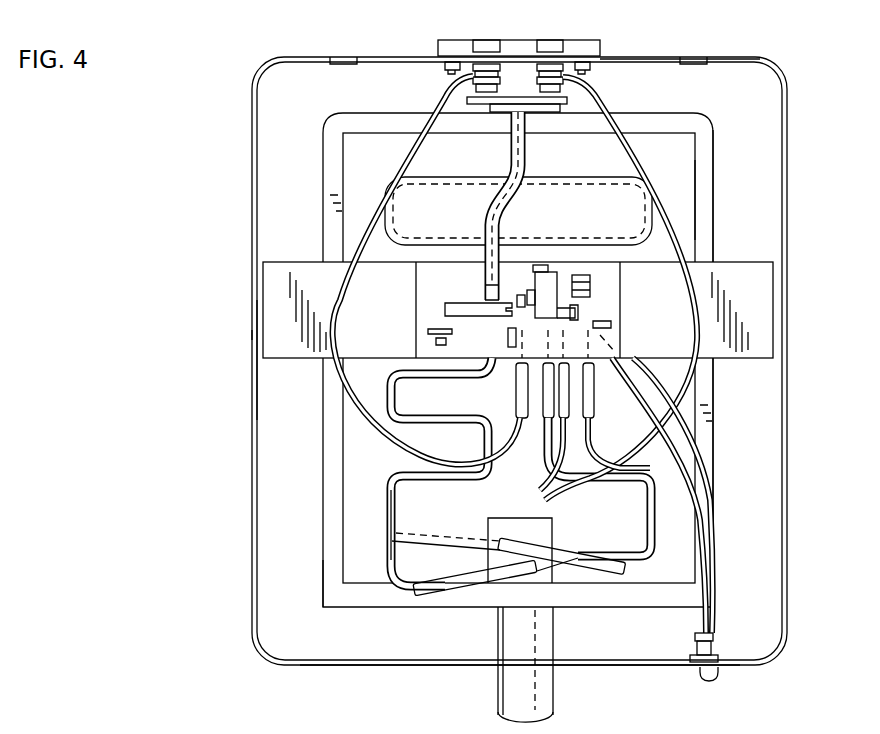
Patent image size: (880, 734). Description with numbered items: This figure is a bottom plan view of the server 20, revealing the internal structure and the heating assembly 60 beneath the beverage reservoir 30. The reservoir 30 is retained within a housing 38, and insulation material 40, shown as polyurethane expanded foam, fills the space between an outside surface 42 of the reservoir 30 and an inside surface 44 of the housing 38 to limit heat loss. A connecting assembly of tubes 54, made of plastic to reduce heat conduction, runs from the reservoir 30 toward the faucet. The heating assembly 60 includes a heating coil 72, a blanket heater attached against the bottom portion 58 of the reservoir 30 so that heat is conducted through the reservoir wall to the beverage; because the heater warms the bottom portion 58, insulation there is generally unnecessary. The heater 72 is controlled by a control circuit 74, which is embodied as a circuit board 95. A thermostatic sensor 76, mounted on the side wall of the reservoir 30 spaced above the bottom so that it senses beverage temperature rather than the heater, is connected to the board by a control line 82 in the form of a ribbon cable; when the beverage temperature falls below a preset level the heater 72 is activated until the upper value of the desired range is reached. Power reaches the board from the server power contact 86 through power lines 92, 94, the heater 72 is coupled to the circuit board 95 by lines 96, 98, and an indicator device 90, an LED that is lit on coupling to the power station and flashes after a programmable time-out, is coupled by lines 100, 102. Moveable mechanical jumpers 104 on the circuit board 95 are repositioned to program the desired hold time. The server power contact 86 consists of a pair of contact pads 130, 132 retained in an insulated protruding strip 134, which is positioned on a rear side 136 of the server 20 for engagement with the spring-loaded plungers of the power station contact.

The server 20 is at (228, 318).
The reservoir 30 is at (325, 405).
The housing 38 is at (346, 668).
The insulation material 40 is at (762, 110).
The outside surface 42 is at (328, 592).
The inside surface 44 is at (322, 536).
The connecting assembly of tubes 54 is at (548, 688).
The bottom portion 58 is at (333, 568).
The heating assembly 60 is at (680, 193).
The heating coil 72 is at (366, 512).
The control circuit 74 is at (448, 288).
The thermostatic sensor 76 is at (473, 110).
The control line 82 is at (507, 173).
The server power contact 86 is at (602, 46).
The indicator device 90 is at (712, 682).
The power line 92 is at (378, 183).
The power line 94 is at (660, 142).
The circuit board 95 is at (620, 345).
The line 96 is at (393, 528).
The line 98 is at (660, 567).
The line 100 is at (697, 603).
The line 102 is at (703, 497).
The mechanical jumpers 104 is at (575, 306).
The contact pad 130 is at (483, 38).
The contact pad 132 is at (548, 40).
The insulated protruding strip 134 is at (440, 50).
The rear side 136 is at (654, 58).